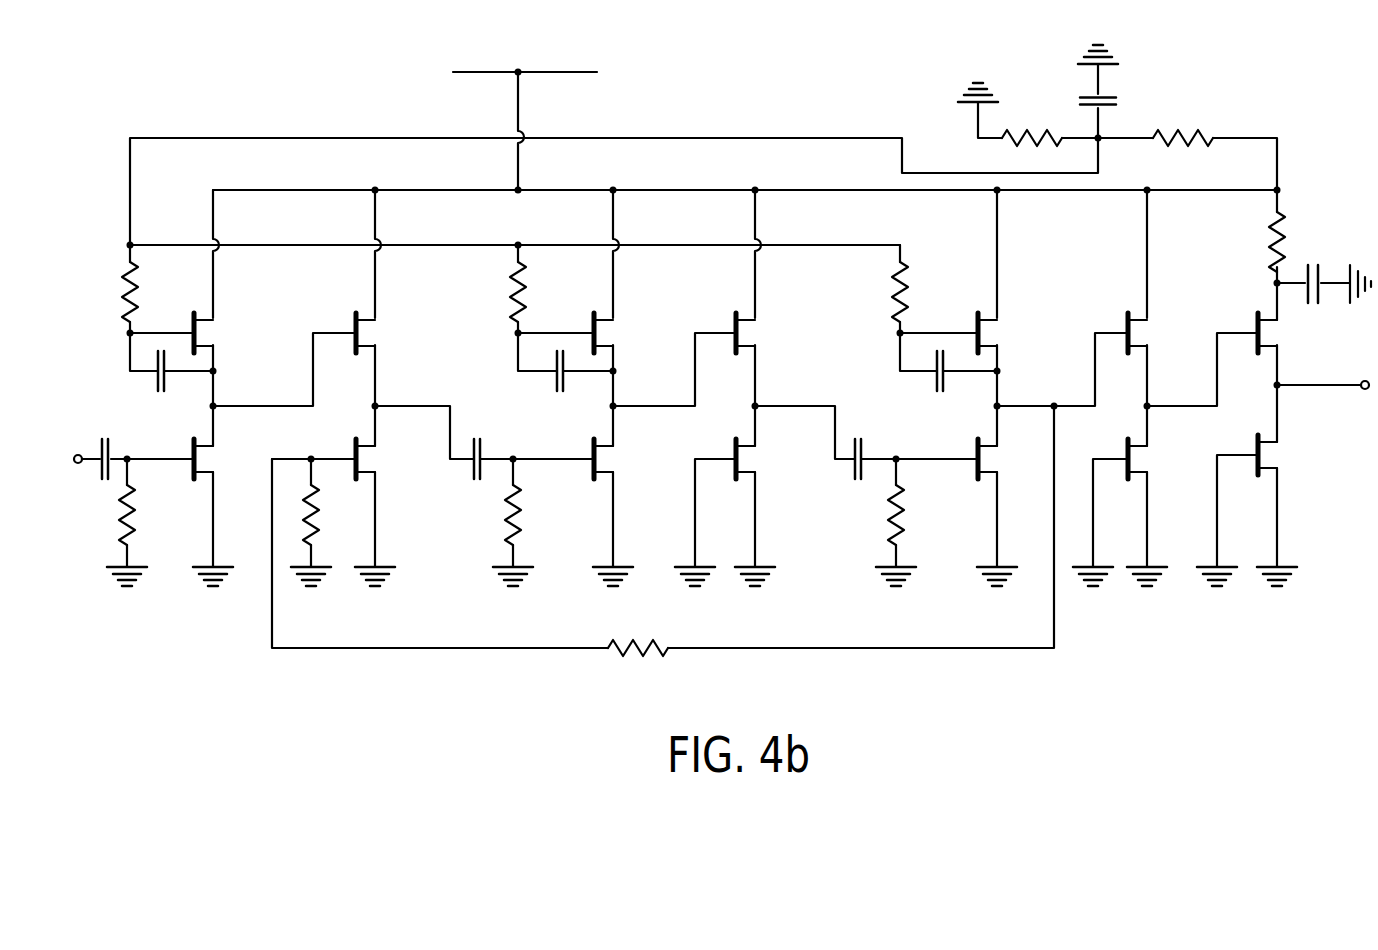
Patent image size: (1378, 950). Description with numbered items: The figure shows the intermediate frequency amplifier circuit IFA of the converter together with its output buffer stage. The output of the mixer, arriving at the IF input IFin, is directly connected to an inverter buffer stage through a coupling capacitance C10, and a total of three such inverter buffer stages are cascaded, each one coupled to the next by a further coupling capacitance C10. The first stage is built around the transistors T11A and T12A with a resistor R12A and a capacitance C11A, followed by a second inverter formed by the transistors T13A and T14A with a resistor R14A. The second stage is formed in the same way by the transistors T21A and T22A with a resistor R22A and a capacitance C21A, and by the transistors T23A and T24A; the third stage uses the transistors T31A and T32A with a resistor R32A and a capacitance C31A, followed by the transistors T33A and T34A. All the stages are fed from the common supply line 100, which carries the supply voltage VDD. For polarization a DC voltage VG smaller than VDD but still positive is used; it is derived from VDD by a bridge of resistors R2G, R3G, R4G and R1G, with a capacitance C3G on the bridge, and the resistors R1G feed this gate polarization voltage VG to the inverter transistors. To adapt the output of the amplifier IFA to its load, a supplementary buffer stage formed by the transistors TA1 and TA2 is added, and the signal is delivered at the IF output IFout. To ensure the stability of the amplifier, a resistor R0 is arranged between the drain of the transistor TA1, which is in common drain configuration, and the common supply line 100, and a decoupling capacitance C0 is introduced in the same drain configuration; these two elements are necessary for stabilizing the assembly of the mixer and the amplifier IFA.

The common supply line 100 is at (681, 179).
The supply voltage VDD is at (525, 114).
The DC polarization voltage VG is at (470, 233).
The bias bridge resistor R1G is at (492, 291).
The inverter transistor T11A is at (197, 333).
The inverter transistor T12A is at (187, 459).
The inverter transistor T13A is at (391, 333).
The inverter transistor T14A is at (349, 459).
The inverter transistor T21A is at (591, 333).
The inverter transistor T22A is at (572, 459).
The inverter transistor T23A is at (771, 333).
The inverter transistor T24A is at (751, 503).
The inverter transistor T31A is at (974, 333).
The inverter transistor T32A is at (955, 459).
The inverter transistor T33A is at (1163, 333).
The inverter transistor T34A is at (1146, 503).
The output buffer transistor TA1 is at (1287, 318).
The output buffer transistor TA2 is at (1267, 501).
The capacitance C11A is at (173, 380).
The capacitance C21A is at (567, 380).
The capacitance C31A is at (950, 380).
The coupling capacitance C10 is at (471, 475).
The resistor R12A is at (152, 522).
The resistor R14A is at (336, 522).
The resistor R22A is at (538, 522).
The resistor R32A is at (921, 522).
The stabilizing resistor R0 is at (1256, 238).
The decoupling capacitance C0 is at (1324, 269).
The bias bridge resistor R2G is at (1028, 114).
The bias decoupling capacitance C3G is at (1121, 91).
The bias bridge resistor R3G is at (1187, 144).
The bias bridge resistor R4G is at (663, 556).
The IF input IFin is at (83, 441).
The IF output IFout is at (1323, 403).